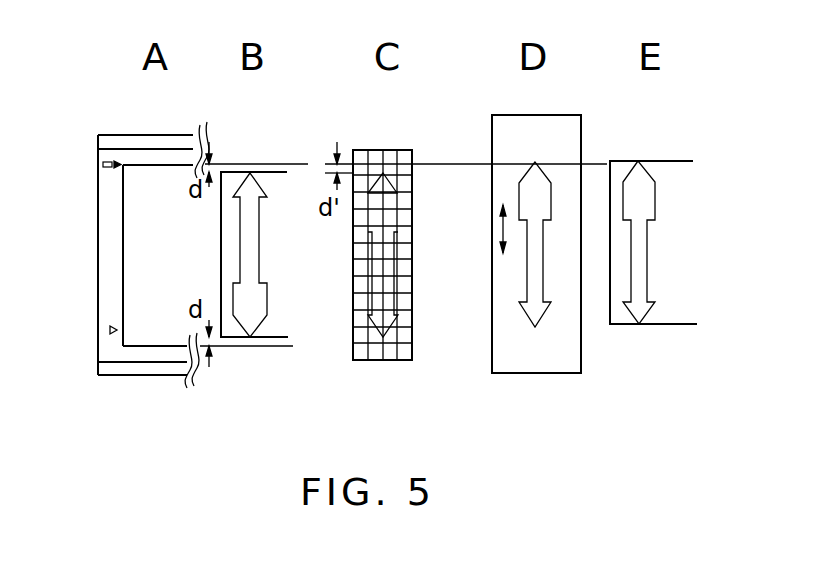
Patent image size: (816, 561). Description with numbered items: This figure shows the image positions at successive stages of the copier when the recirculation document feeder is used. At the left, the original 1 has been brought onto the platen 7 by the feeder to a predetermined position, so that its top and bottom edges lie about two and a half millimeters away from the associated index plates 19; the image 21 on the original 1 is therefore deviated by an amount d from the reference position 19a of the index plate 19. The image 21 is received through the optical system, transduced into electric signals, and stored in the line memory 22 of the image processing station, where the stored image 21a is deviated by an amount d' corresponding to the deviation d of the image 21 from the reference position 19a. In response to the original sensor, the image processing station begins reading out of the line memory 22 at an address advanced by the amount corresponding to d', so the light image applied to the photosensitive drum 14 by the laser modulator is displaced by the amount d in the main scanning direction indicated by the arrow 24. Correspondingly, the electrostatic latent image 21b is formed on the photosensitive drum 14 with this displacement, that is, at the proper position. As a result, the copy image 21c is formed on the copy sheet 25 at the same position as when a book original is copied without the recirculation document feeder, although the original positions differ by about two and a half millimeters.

The original 1 is at (274, 180).
The platen 7 is at (141, 270).
The photosensitive drum 14 is at (492, 140).
The index plate 19 is at (147, 155).
The reference position 19a is at (156, 168).
The image 21 is at (256, 330).
The image in the line memory 21a is at (392, 322).
The electrostatic latent image 21b is at (535, 315).
The copy image 21c is at (633, 315).
The line memory 22 is at (353, 262).
The arrow 24 is at (503, 233).
The copy sheet 25 is at (676, 328).